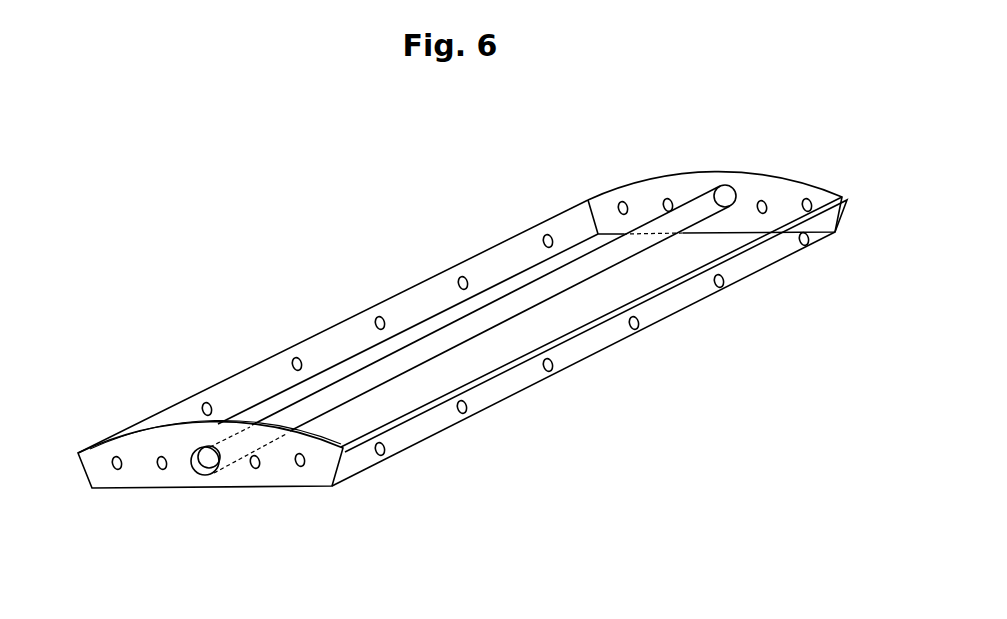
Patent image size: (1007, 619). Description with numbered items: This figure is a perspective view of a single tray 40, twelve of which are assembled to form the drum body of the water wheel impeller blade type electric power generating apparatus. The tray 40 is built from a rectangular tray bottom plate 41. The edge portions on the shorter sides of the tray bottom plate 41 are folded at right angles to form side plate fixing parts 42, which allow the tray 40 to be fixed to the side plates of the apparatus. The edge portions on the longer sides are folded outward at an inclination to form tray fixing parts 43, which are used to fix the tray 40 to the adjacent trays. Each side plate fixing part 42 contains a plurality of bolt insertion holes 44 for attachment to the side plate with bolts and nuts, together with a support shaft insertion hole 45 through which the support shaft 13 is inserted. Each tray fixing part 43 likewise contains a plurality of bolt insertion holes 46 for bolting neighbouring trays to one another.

The support shaft 13 is at (628, 254).
The tray 40 is at (503, 222).
The tray bottom plate 41 is at (575, 313).
The side plate fixing part 42 is at (136, 479).
The tray fixing part 43 is at (415, 296).
The bolt insertion hole 44 is at (300, 467).
The support shaft insertion hole 45 is at (214, 473).
The bolt insertion hole 46 is at (294, 357).